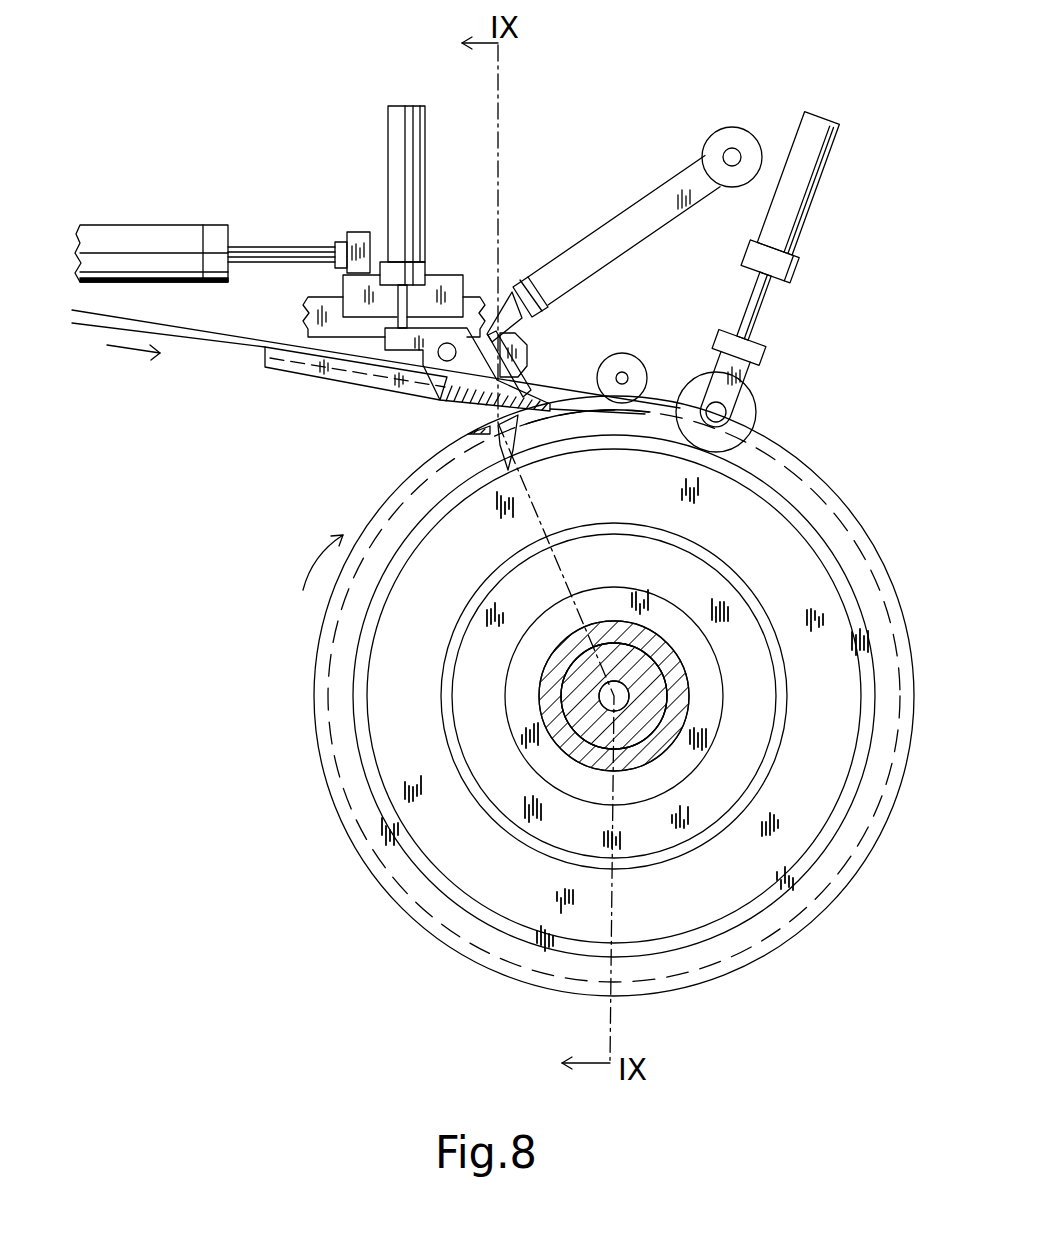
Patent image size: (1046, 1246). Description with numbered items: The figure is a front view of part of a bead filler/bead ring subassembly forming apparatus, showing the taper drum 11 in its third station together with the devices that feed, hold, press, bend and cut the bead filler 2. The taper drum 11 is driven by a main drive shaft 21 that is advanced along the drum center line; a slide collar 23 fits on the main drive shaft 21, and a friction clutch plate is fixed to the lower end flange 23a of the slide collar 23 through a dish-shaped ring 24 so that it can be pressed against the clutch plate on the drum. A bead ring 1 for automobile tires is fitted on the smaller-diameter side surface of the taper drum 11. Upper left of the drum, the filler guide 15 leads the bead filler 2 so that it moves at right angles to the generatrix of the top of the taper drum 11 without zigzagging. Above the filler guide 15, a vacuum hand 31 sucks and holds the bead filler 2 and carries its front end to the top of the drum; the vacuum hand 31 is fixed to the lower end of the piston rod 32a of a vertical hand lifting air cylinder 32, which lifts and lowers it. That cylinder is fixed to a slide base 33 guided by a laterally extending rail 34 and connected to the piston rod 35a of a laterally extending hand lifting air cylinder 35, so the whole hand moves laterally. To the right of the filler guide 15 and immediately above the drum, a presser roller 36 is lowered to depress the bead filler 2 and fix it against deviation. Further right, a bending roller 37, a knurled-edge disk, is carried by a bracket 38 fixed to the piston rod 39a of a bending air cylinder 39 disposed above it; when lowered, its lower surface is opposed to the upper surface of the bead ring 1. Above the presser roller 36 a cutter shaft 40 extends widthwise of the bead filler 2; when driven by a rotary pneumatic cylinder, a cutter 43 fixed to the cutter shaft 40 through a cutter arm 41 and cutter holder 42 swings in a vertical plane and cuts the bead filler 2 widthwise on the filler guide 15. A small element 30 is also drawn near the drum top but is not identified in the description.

The bead ring 1 is at (483, 917).
The bead filler 2 is at (193, 338).
The taper drum 11 is at (557, 696).
The filler guide 15 is at (322, 373).
The main drive shaft 21 is at (575, 690).
The slide collar 23 is at (545, 710).
The lower end flange of the slide collar 23a is at (528, 731).
The dish-shaped ring 24 is at (507, 802).
The blade tip 30 is at (470, 431).
The vacuum hand 31 is at (437, 362).
The hand lifting air cylinder 32 is at (414, 170).
The piston rod 32a is at (410, 310).
The slide base 33 is at (345, 287).
The rail 34 is at (315, 318).
The laterally extending hand lifting air cylinder 35 is at (155, 225).
The piston rod 35a is at (285, 247).
The presser roller 36 is at (633, 360).
The bending roller 37 is at (757, 412).
The bracket 38 is at (752, 372).
The bending air cylinder 39 is at (806, 198).
The piston rod 39a is at (745, 310).
The cutter shaft 40 is at (728, 148).
The cutter arm 41 is at (658, 200).
The cutter holder 42 is at (528, 323).
The cutter 43 is at (522, 378).